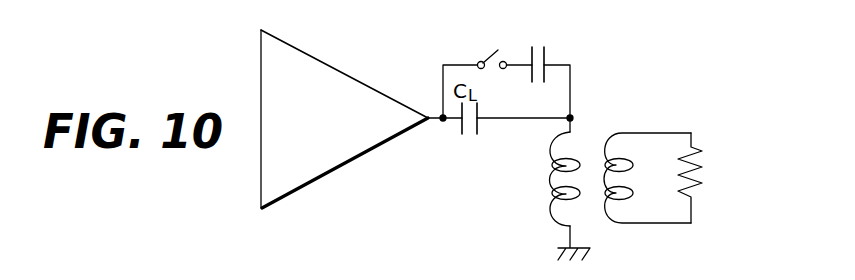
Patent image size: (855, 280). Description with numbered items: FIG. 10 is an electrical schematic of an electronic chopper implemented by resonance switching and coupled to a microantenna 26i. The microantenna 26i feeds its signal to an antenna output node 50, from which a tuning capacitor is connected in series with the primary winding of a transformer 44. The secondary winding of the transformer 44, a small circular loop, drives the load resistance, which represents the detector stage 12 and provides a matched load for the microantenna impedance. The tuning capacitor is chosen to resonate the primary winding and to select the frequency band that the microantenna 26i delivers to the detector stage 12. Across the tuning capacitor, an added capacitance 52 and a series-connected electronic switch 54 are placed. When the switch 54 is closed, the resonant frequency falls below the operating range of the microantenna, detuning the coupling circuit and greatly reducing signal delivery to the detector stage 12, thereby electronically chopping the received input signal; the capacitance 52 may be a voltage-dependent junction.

The microantenna 26i is at (338, 70).
The antenna output node 50 is at (443, 122).
The electronic switch 54 is at (497, 51).
The capacitance 52 is at (539, 46).
The transformer 44 is at (587, 147).
The detector stage 12 is at (721, 124).